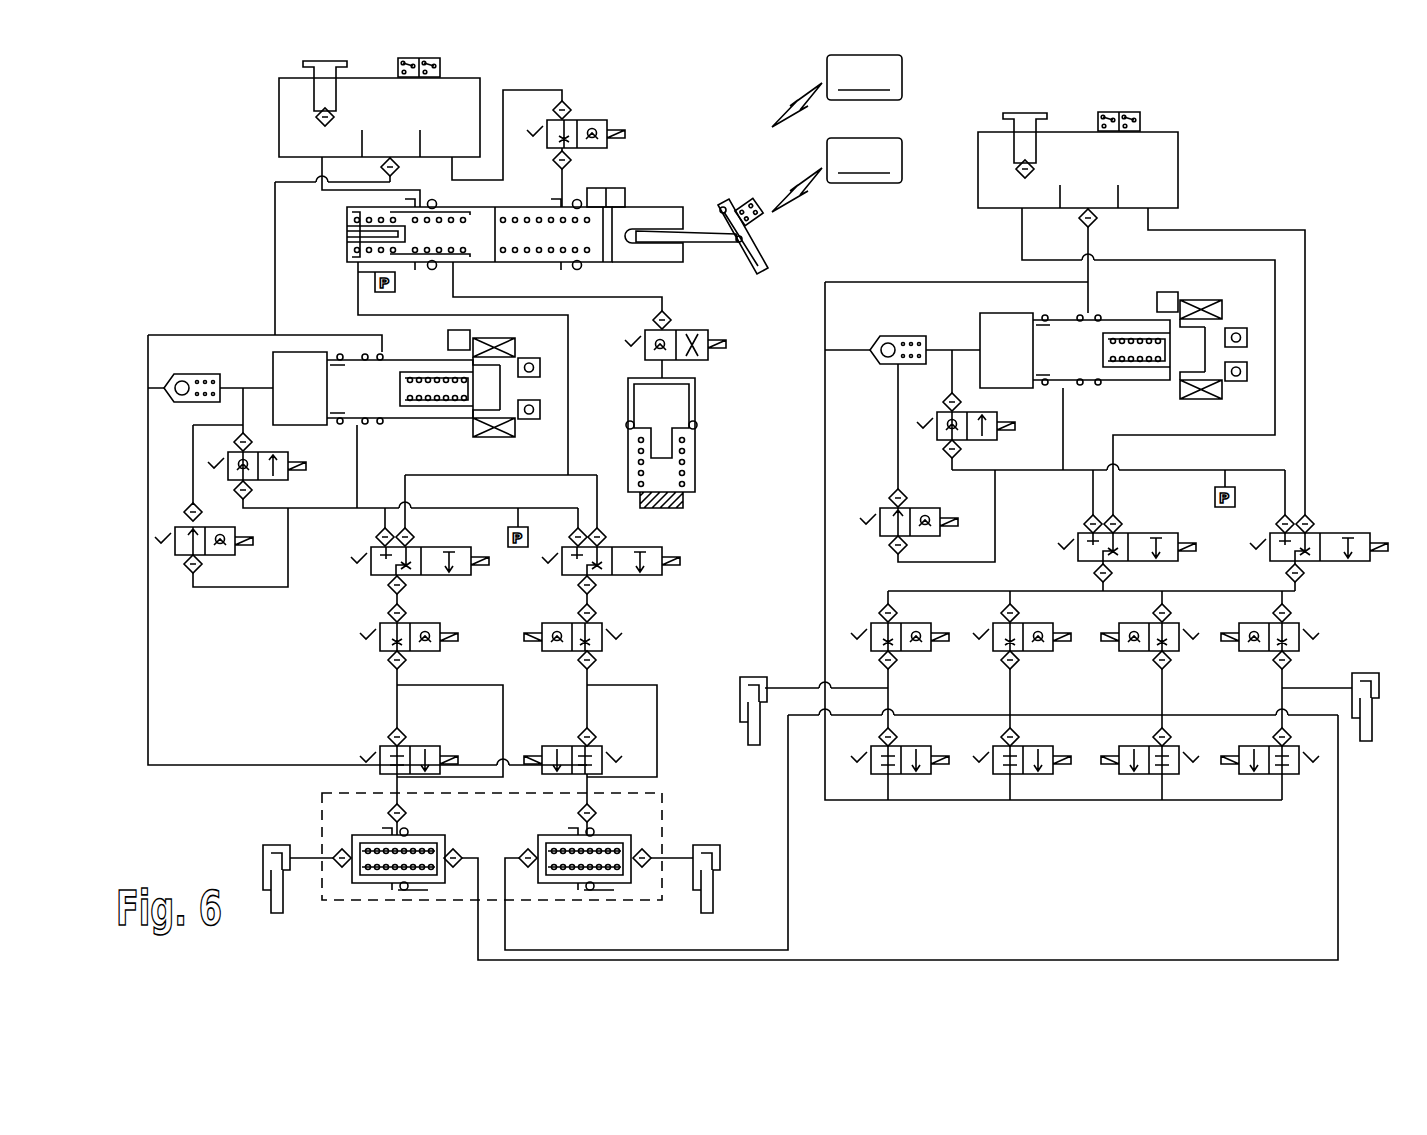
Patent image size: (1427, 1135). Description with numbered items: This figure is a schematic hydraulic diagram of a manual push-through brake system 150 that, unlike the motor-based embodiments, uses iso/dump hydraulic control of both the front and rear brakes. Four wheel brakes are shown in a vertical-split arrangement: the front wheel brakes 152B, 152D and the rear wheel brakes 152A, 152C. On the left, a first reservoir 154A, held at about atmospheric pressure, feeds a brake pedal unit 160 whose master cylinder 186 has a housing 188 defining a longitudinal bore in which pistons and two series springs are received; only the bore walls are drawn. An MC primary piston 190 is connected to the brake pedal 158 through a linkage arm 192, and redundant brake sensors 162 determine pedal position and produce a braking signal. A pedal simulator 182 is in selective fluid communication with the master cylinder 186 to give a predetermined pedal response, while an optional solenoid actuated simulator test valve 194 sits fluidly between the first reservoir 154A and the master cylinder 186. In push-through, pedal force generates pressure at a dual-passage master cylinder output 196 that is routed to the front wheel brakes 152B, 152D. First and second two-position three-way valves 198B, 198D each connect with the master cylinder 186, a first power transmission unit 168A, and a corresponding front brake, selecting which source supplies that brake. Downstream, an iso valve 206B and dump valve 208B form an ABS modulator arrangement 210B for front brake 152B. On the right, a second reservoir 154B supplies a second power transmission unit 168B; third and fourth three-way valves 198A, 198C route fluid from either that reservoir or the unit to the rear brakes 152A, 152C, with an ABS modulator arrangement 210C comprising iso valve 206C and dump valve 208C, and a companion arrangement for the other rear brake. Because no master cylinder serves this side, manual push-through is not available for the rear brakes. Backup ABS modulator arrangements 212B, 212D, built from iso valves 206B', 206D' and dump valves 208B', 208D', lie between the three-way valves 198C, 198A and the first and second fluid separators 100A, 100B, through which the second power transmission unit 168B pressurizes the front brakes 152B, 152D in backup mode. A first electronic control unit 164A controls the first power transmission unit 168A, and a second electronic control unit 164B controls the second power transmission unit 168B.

The brake system 150 is at (1306, 90).
The first reservoir 154A is at (506, 72).
The second reservoir 154B is at (1166, 112).
The solenoid actuated simulator test valve 194 is at (588, 105).
The brake sensor 162 is at (597, 188).
The brake pedal unit 160 is at (726, 174).
The brake pedal 158 is at (752, 238).
The MC primary piston 190 is at (636, 213).
The linkage arm 192 is at (702, 226).
The first electronic control unit 164A is at (837, 91).
The second electronic control unit 164B is at (837, 175).
The master cylinder 186 is at (549, 257).
The housing 188 is at (513, 264).
The master cylinder output 196 is at (372, 315).
The pedal simulator 182 is at (722, 438).
The first power transmission unit 168A is at (266, 330).
The second power transmission unit 168B is at (1270, 310).
The first two-position three-way valve 198B is at (378, 577).
The second two-position three-way valve 198D is at (632, 577).
The fourth two-position three-way valve 198C is at (1127, 533).
The third two-position three-way valve 198A is at (1322, 533).
The iso valve 206B is at (613, 666).
The iso valve 206C is at (915, 623).
The backup iso valve 206D' is at (1047, 661).
The backup iso valve 206B' is at (1178, 661).
The dump valve 208B is at (623, 766).
The dump valve 208C is at (915, 746).
The backup dump valve 208D' is at (1047, 757).
The backup dump valve 208B' is at (1181, 757).
The ABS modulator arrangement 210B is at (640, 715).
The ABS modulator arrangement 210C is at (890, 822).
The backup ABS modulator arrangement 212D is at (1018, 822).
The backup ABS modulator arrangement 212B is at (1160, 822).
The first fluid separator 100A is at (395, 922).
The second fluid separator 100B is at (563, 916).
The rear wheel brake 152A is at (1380, 690).
The front wheel brake 152B is at (255, 858).
The rear wheel brake 152C is at (740, 690).
The front wheel brake 152D is at (722, 858).